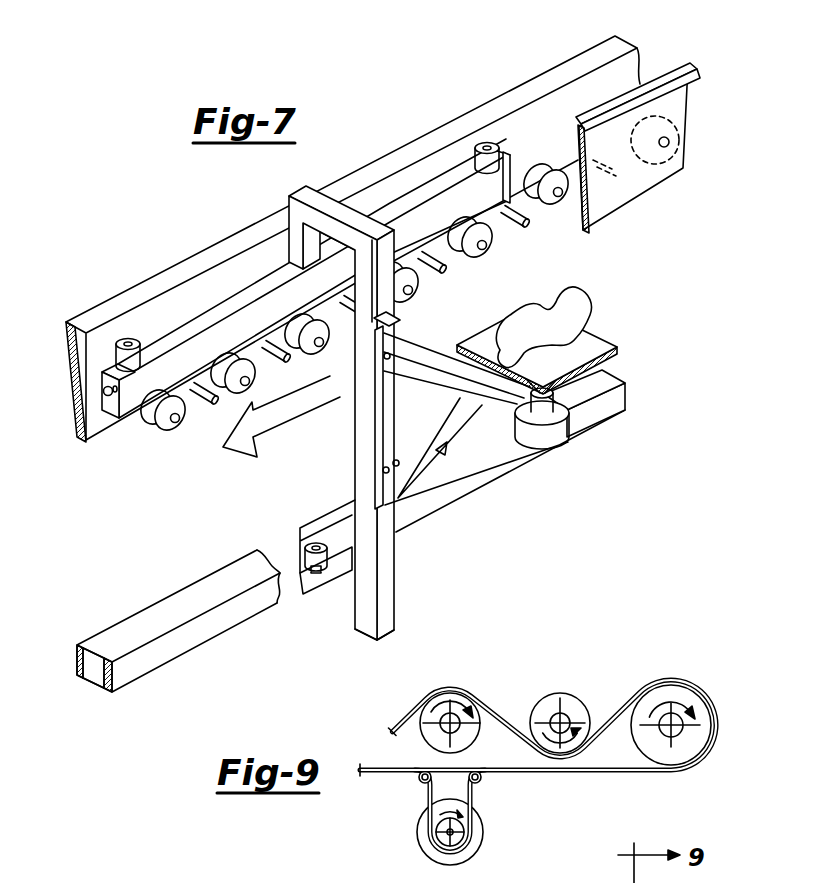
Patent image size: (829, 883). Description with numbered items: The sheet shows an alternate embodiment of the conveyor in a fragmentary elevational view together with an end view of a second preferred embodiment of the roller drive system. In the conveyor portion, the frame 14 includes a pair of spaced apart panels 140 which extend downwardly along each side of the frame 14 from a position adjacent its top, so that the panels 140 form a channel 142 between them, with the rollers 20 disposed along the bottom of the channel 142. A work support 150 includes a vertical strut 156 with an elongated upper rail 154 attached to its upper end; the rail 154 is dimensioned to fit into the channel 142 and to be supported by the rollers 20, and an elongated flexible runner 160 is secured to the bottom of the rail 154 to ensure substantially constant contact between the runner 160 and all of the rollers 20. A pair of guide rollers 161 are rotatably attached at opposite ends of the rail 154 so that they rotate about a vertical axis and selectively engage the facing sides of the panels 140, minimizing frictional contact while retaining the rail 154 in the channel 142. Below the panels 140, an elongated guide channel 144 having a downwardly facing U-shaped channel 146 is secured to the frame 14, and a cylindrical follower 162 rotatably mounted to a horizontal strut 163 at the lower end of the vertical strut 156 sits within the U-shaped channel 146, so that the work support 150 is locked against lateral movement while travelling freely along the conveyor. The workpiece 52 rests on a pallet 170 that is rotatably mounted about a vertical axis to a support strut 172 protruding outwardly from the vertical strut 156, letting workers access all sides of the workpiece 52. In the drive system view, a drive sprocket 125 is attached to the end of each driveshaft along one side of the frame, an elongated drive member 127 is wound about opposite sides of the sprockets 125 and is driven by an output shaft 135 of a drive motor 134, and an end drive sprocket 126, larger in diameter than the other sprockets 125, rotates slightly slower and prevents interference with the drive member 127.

In FIG. 7, the conveyor frame 14 is at (103, 296).
In FIG. 7, the rollers 20 is at (236, 400).
In FIG. 7, the workpiece 52 is at (578, 297).
In FIG. 9, the drive sprocket 125 is at (552, 709).
In FIG. 9, the end drive sprocket 126 is at (688, 744).
In FIG. 9, the drive member 127 is at (634, 711).
In FIG. 9, the drive motor 134 is at (423, 823).
In FIG. 9, the output shaft 135 is at (452, 833).
In FIG. 7, the panels 140 is at (597, 118).
In FIG. 7, the channel 142 is at (552, 126).
In FIG. 7, the guide channel 144 is at (216, 572).
In FIG. 7, the U-shaped channel 146 is at (90, 668).
In FIG. 7, the work support 150 is at (355, 443).
In FIG. 7, the upper rail 154 is at (232, 303).
In FIG. 7, the vertical strut 156 is at (355, 494).
In FIG. 7, the flexible runner 160 is at (141, 434).
In FIG. 7, the guide rollers 161 is at (136, 344).
In FIG. 7, the cylindrical follower 162 is at (308, 547).
In FIG. 7, the horizontal strut 163 is at (363, 633).
In FIG. 7, the pallet 170 is at (598, 346).
In FIG. 7, the support strut 172 is at (428, 345).